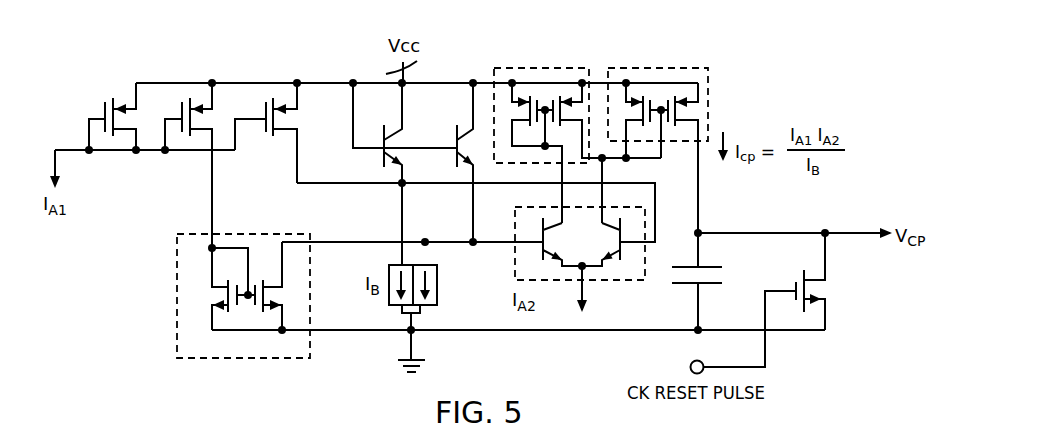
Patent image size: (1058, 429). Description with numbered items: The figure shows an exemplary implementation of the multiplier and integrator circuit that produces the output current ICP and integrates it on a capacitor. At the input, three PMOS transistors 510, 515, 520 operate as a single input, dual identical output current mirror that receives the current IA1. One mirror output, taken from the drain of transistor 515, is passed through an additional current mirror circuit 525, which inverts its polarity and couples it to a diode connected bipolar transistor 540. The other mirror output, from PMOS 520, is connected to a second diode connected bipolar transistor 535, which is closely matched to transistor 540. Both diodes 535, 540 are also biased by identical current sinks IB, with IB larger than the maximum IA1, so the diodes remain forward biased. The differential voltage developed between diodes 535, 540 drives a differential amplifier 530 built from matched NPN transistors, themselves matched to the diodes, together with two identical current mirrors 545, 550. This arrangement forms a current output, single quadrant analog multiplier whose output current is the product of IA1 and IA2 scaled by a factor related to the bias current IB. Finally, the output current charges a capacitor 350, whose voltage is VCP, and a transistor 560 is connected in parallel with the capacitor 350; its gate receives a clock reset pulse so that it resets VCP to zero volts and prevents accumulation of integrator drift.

The PMOS transistor 510 is at (110, 102).
The PMOS transistor 515 is at (187, 102).
The PMOS transistor 520 is at (268, 102).
The current mirror circuit 525 is at (175, 257).
The differential amplifier 530 is at (630, 280).
The diode connected bipolar transistor 535 is at (370, 149).
The diode connected bipolar transistor 540 is at (450, 163).
The current mirror 545 is at (518, 67).
The current mirror 550 is at (697, 67).
The capacitor 350 is at (710, 267).
The transistor 560 is at (820, 290).